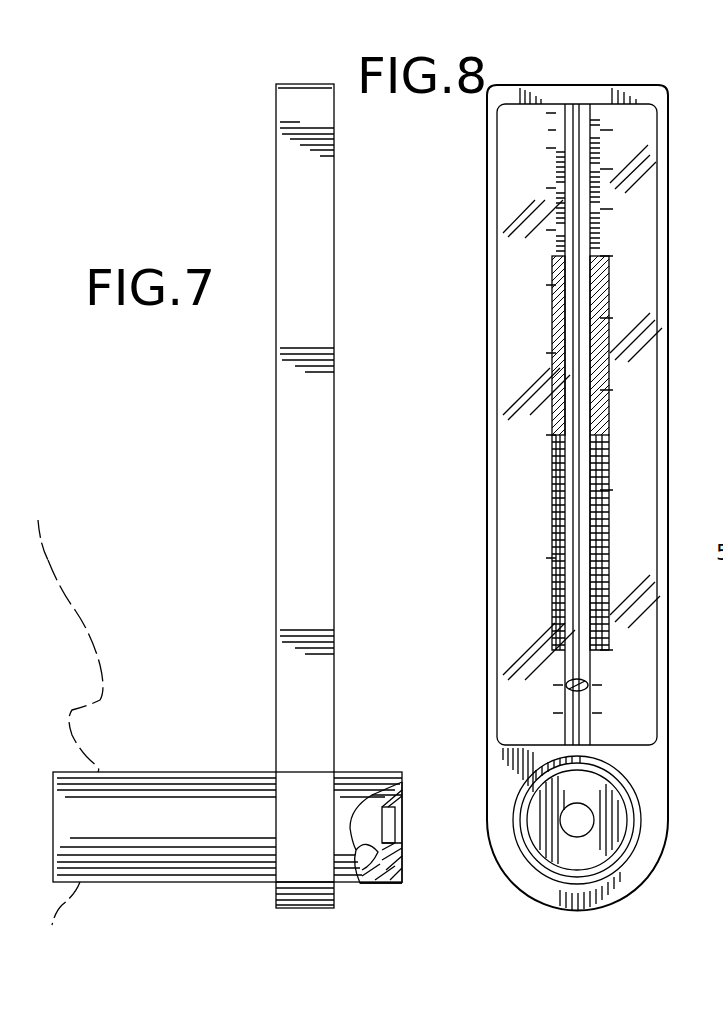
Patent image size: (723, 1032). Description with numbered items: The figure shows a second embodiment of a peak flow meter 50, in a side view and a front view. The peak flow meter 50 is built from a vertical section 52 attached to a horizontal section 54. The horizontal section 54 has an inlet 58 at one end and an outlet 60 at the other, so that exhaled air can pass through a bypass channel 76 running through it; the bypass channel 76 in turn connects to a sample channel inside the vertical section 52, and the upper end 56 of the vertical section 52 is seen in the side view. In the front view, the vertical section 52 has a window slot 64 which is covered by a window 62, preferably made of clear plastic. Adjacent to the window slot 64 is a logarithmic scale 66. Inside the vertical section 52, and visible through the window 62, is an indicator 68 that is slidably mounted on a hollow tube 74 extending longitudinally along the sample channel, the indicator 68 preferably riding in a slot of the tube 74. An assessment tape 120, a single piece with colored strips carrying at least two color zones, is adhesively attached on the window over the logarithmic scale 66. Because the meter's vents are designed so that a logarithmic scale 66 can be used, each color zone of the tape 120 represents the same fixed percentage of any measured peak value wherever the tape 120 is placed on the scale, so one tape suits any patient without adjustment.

In FIG. 7, the peak flow meter 50 is at (248, 385).
In FIG. 8, the peak flow meter 50 is at (476, 575).
In FIG. 7, the vertical section 52 is at (314, 257).
In FIG. 8, the vertical section 52 is at (494, 446).
In FIG. 7, the horizontal section 54 is at (165, 772).
In FIG. 7, the upper end of housing 56 is at (305, 84).
In FIG. 7, the inlet 58 is at (42, 772).
In FIG. 8, the inlet 58 is at (632, 842).
In FIG. 7, the outlet 60 is at (402, 821).
In FIG. 8, the window 62 is at (507, 127).
In FIG. 8, the window slot 64 is at (587, 140).
In FIG. 8, the logarithmic scale 66 is at (605, 210).
In FIG. 8, the indicator 68 is at (580, 685).
In FIG. 8, the hollow tube 74 is at (578, 126).
In FIG. 7, the bypass channel 76 is at (380, 876).
In FIG. 8, the assessment tape 120 is at (608, 368).